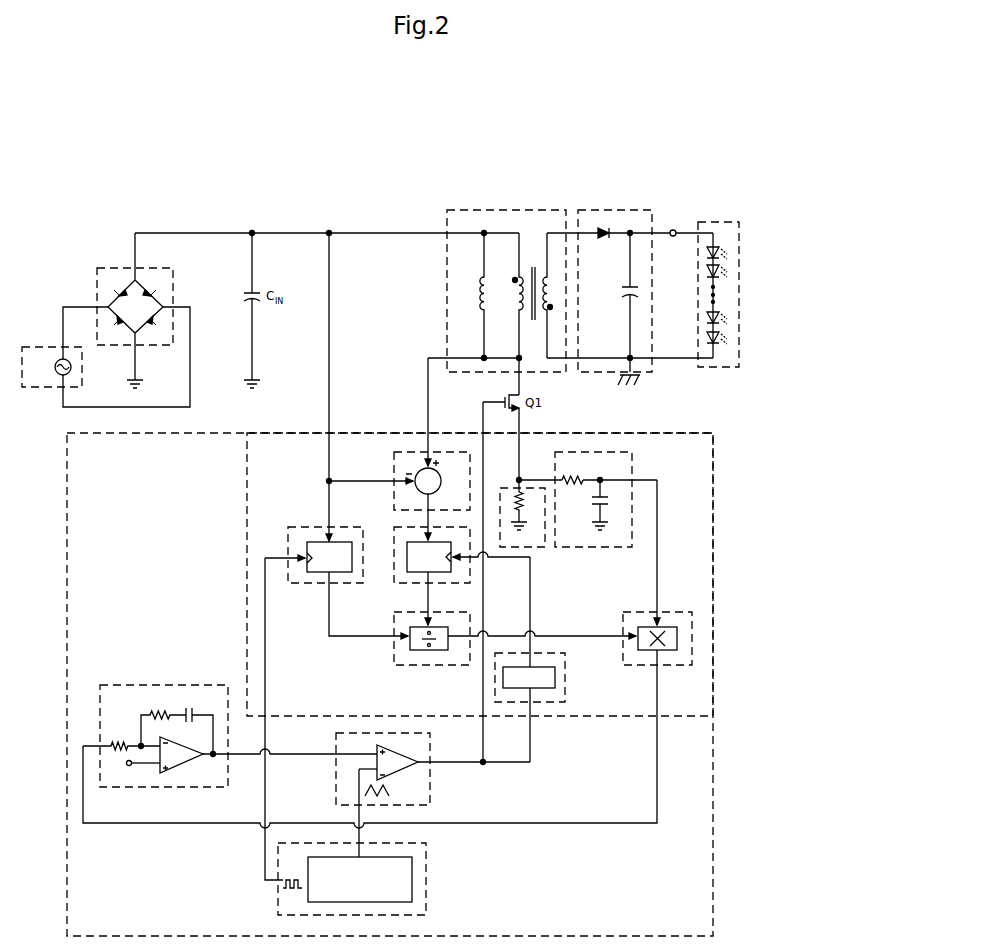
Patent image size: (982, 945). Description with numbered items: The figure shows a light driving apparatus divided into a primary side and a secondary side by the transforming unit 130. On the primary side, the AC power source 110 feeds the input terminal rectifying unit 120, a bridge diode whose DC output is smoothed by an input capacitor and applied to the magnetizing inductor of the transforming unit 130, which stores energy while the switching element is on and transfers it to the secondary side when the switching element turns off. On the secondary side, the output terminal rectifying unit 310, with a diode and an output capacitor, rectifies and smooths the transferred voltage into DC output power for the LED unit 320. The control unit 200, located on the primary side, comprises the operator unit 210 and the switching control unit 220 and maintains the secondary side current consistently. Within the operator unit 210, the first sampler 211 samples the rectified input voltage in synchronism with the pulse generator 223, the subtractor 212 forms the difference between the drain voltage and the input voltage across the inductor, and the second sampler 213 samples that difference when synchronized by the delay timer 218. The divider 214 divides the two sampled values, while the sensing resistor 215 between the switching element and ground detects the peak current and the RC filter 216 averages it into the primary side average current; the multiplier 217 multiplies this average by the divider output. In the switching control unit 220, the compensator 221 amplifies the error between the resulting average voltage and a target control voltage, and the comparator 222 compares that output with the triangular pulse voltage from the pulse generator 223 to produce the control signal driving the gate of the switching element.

The AC power source 110 is at (40, 347).
The input terminal rectifying unit 120 is at (113, 268).
The transforming unit 130 is at (488, 210).
The output terminal rectifying unit 310 is at (607, 210).
The LED unit 320 is at (726, 222).
The control unit 200 is at (783, 668).
The operator unit 210 is at (783, 668).
The sampler 211 is at (305, 527).
The subtractor 212 is at (394, 463).
The sampler 213 is at (394, 586).
The divider 214 is at (394, 661).
The sensing resistor 215 is at (545, 547).
The RC filter 216 is at (620, 547).
The multiplier 217 is at (668, 612).
The delay timer 218 is at (565, 686).
The switching control unit 220 is at (783, 765).
The compensator 221 is at (158, 685).
The comparator 222 is at (430, 790).
The pulse generator 223 is at (426, 900).